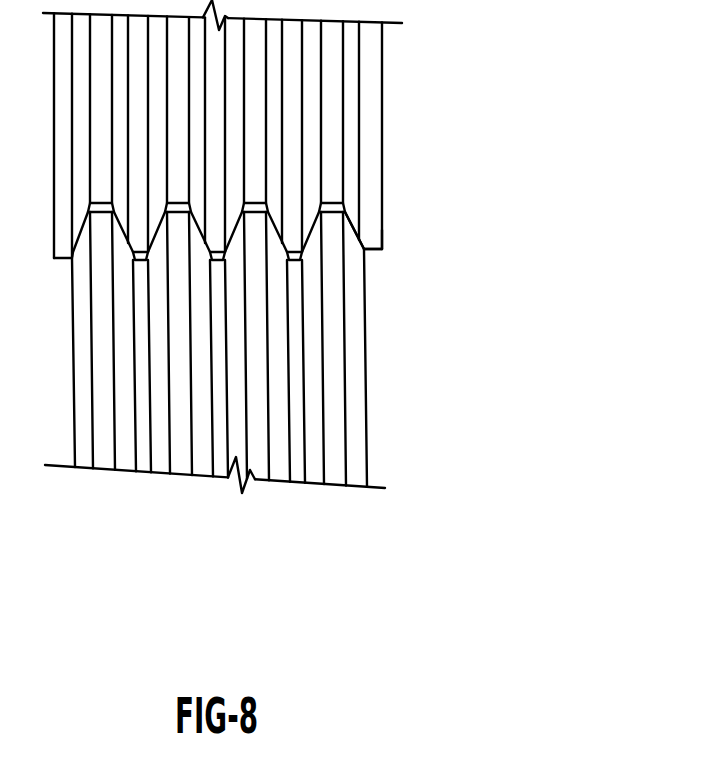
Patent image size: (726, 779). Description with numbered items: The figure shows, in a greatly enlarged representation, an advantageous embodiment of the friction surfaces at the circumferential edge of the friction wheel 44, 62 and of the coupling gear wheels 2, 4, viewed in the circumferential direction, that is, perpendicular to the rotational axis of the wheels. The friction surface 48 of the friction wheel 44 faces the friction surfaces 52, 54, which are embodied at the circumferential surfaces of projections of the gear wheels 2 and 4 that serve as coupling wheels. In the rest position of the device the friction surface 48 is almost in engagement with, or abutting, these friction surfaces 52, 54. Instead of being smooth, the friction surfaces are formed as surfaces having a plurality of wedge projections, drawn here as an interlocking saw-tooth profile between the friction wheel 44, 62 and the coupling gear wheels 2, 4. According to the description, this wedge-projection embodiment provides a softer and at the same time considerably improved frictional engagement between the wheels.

The friction wheel 44 is at (320, 130).
The friction wheel 62 is at (355, 87).
The friction surface 48 is at (356, 237).
The friction surface 52 is at (507, 214).
The friction surface 54 is at (362, 233).
The gear wheel 2 is at (296, 352).
The gear wheel 4 is at (355, 360).